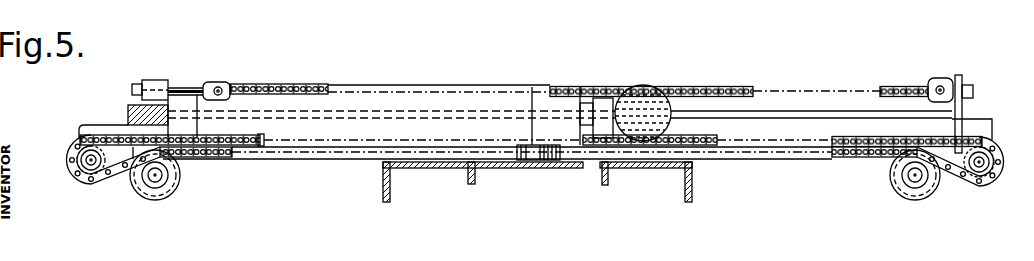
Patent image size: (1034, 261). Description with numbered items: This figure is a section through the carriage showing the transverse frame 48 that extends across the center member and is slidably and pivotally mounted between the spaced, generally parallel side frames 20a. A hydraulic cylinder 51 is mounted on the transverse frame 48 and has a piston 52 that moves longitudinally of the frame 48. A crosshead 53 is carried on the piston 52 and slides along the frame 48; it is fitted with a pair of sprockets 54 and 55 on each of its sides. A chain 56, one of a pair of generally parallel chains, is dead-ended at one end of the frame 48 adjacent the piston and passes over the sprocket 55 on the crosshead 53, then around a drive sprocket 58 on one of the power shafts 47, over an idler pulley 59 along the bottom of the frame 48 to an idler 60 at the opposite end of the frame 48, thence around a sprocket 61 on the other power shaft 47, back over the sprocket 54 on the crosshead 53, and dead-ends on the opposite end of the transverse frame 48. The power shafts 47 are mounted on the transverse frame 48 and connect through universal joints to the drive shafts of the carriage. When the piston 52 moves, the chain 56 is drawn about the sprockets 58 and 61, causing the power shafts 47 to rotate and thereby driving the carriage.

The side frame 20a is at (389, 190).
The power shaft 47 is at (92, 165).
The transverse frame 48 is at (766, 160).
The hydraulic cylinder 51 is at (412, 84).
The piston 52 is at (588, 106).
The crosshead 53 is at (606, 122).
The sprocket 54 is at (658, 141).
The sprocket 55 is at (638, 92).
The chain 56 is at (268, 84).
The drive sprocket 58 is at (112, 148).
The idler pulley 59 is at (172, 183).
The idler 60 is at (898, 183).
The sprocket 61 is at (970, 148).